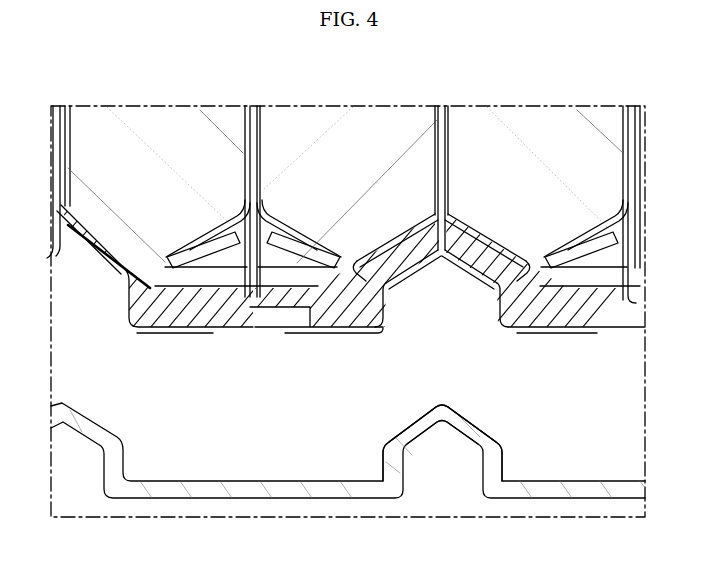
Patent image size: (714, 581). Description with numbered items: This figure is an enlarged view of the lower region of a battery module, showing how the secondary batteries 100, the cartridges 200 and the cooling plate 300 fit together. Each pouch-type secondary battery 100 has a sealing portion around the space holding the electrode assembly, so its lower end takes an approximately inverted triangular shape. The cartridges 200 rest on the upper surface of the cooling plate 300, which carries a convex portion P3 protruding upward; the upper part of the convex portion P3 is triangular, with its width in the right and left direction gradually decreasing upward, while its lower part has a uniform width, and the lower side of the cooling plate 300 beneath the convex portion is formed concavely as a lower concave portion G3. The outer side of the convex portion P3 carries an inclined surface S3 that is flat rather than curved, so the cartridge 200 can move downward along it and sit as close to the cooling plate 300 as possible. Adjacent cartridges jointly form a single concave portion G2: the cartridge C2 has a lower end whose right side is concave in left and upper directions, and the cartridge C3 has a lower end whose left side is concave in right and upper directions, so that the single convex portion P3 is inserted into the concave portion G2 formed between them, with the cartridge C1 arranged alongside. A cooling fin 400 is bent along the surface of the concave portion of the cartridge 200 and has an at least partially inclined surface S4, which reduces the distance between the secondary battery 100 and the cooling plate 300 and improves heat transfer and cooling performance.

The secondary battery 100 is at (153, 122).
The cartridge 200 is at (228, 330).
The cooling plate 300 is at (585, 500).
The cooling fin 400 is at (172, 333).
The cartridge C1 is at (107, 257).
The cartridge C2 is at (400, 252).
The cartridge C3 is at (485, 252).
The inclined surface S3 is at (406, 407).
The inclined surface S4 is at (457, 281).
The concave portion G2 is at (449, 338).
The lower concave portion G3 is at (438, 455).
The convex portion P3 is at (523, 429).